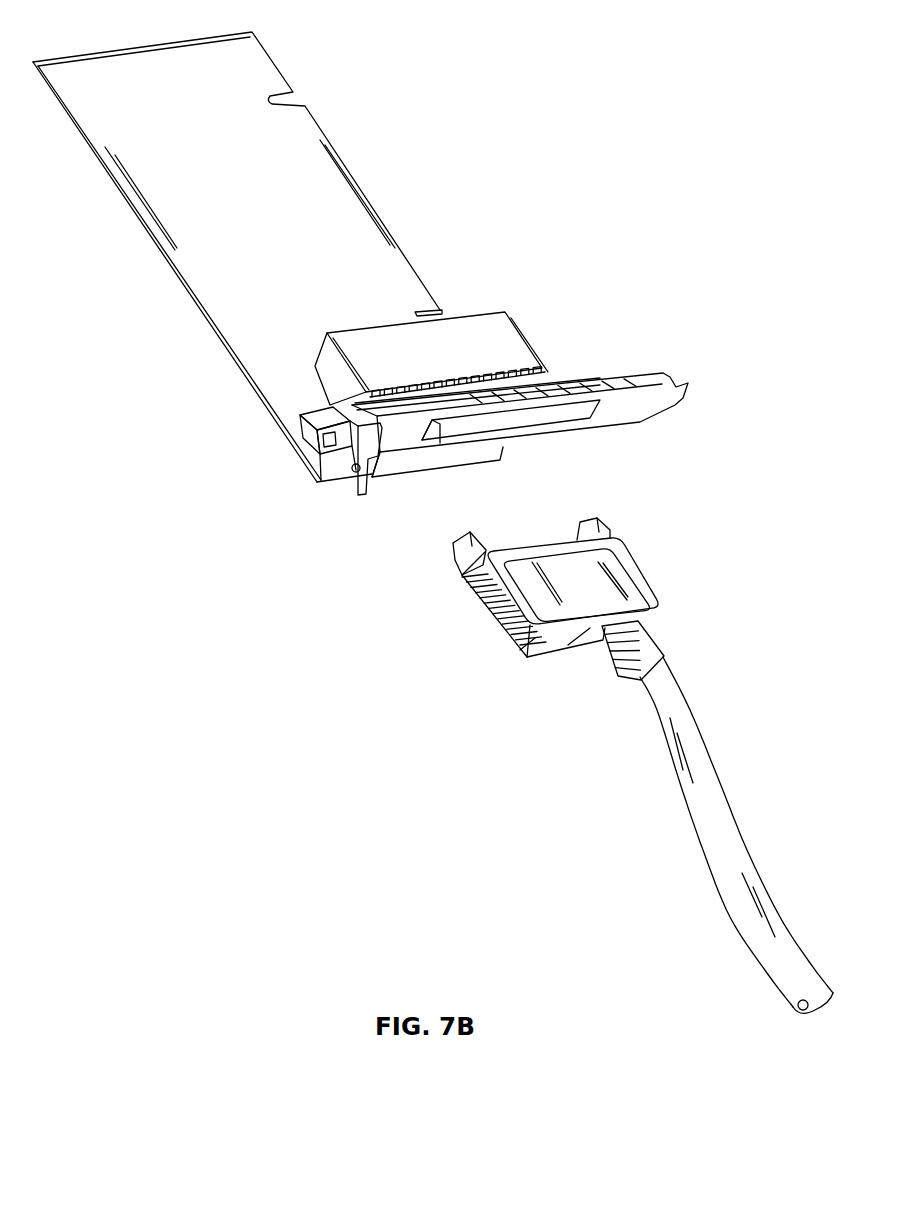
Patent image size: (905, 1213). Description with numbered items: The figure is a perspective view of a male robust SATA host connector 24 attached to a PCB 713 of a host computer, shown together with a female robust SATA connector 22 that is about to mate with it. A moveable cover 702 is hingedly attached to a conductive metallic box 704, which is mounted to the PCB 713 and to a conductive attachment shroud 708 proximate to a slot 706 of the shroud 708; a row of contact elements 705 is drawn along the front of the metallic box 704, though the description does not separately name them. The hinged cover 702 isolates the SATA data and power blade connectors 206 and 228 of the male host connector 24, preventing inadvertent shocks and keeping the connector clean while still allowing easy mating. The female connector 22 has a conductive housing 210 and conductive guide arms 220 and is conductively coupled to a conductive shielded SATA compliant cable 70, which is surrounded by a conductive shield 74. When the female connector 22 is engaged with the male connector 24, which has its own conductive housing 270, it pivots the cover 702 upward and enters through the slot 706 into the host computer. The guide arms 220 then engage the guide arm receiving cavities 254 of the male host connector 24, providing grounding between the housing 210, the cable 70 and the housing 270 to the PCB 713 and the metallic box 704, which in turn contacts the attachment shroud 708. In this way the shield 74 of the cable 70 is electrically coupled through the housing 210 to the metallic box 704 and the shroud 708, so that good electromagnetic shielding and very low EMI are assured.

The PCB 713 is at (333, 183).
The conductive metallic box 704 is at (516, 337).
The contacts 705 is at (393, 380).
The moveable cover 702 is at (533, 366).
The conductive attachment shroud 708 is at (653, 407).
The slot 706 is at (528, 430).
The SATA data blade connector 206 is at (433, 442).
The SATA power blade connector 228 is at (327, 478).
The conductive housing 270 is at (323, 415).
The male robust SATA host connector 24 is at (302, 438).
The guide arm receiving cavities 254 is at (318, 470).
The female robust SATA connector 22 is at (650, 553).
The conductive guide arms 220 is at (457, 553).
The conductive housing 210 is at (637, 597).
The conductive shielded SATA compliant cable 70 is at (690, 745).
The conductive shield 74 is at (733, 802).